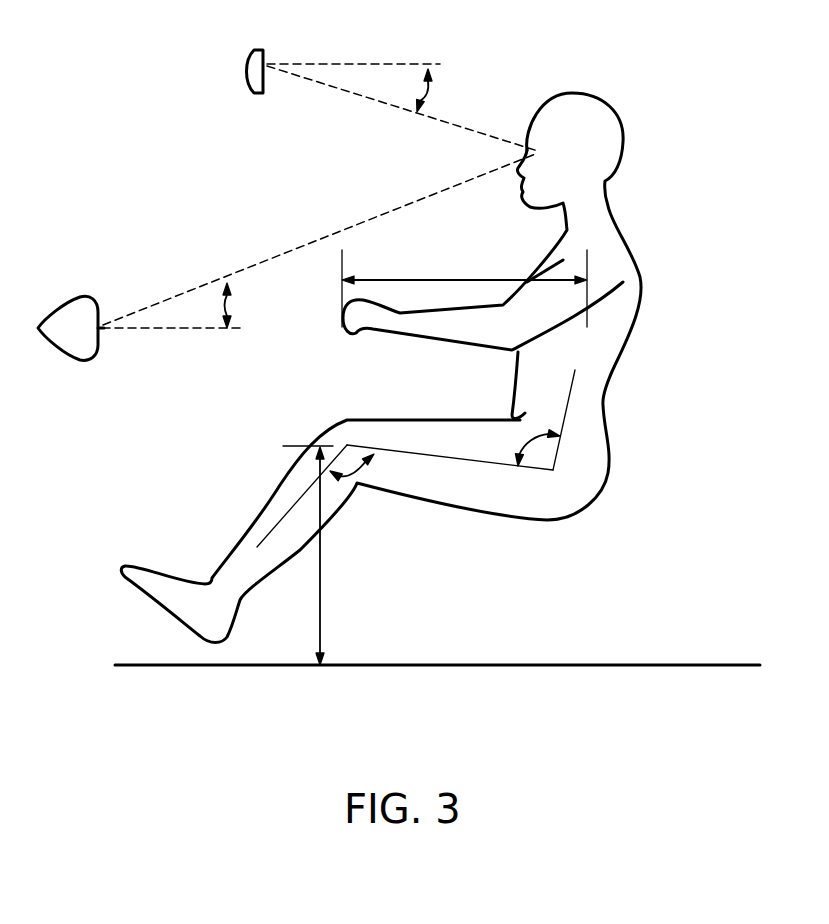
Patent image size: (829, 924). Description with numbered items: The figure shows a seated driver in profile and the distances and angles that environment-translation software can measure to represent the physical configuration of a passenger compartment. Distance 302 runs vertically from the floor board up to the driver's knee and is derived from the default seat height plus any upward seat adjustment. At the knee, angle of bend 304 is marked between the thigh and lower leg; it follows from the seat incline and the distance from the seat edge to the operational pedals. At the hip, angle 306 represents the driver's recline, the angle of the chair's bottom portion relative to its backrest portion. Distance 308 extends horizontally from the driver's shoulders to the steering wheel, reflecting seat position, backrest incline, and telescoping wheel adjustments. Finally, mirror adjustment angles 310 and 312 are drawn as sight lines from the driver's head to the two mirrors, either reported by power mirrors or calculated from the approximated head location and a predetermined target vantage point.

The distance from floor board to knee 302 is at (322, 603).
The angle of knee bend 304 is at (357, 473).
The angle of recline 306 is at (520, 458).
The distance from shoulders to steering wheel 308 is at (455, 280).
The mirror adjustment angle 310 is at (232, 307).
The mirror adjustment angle 312 is at (430, 92).